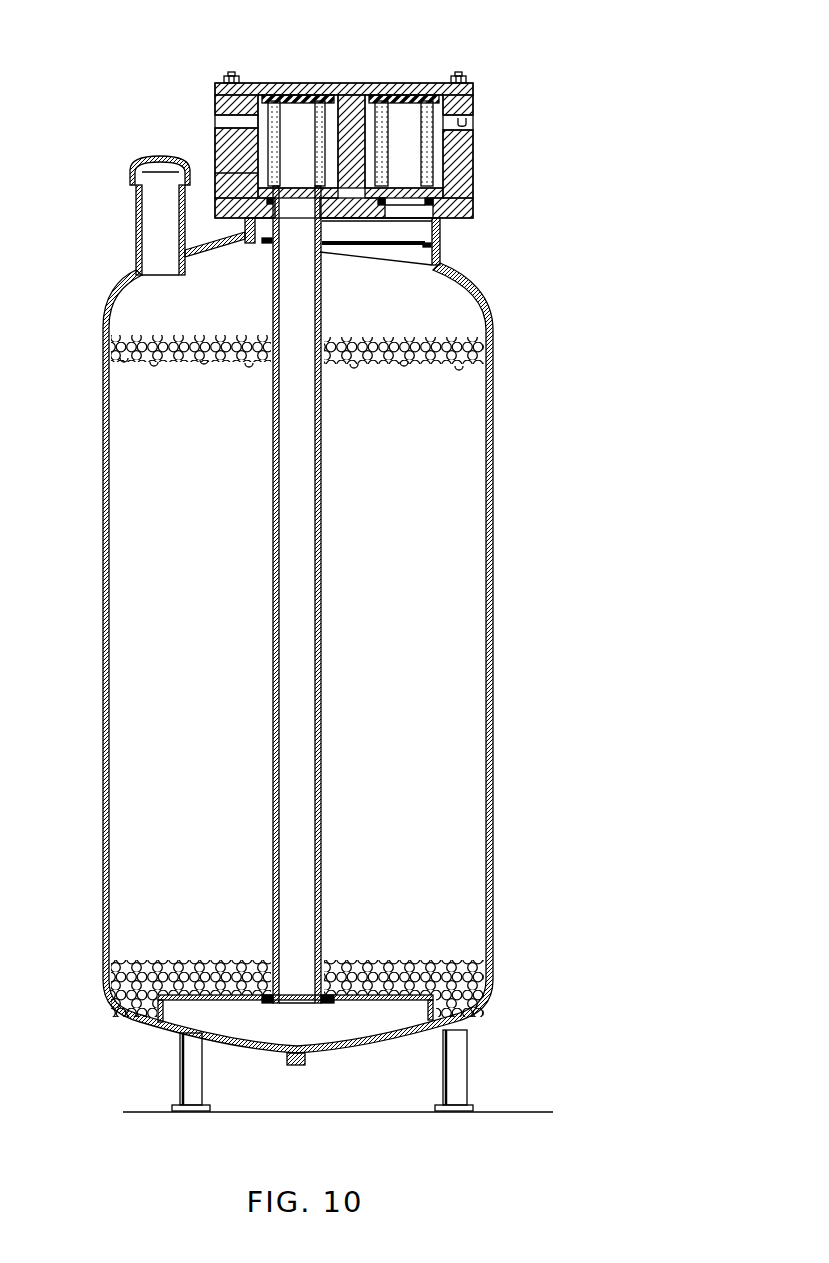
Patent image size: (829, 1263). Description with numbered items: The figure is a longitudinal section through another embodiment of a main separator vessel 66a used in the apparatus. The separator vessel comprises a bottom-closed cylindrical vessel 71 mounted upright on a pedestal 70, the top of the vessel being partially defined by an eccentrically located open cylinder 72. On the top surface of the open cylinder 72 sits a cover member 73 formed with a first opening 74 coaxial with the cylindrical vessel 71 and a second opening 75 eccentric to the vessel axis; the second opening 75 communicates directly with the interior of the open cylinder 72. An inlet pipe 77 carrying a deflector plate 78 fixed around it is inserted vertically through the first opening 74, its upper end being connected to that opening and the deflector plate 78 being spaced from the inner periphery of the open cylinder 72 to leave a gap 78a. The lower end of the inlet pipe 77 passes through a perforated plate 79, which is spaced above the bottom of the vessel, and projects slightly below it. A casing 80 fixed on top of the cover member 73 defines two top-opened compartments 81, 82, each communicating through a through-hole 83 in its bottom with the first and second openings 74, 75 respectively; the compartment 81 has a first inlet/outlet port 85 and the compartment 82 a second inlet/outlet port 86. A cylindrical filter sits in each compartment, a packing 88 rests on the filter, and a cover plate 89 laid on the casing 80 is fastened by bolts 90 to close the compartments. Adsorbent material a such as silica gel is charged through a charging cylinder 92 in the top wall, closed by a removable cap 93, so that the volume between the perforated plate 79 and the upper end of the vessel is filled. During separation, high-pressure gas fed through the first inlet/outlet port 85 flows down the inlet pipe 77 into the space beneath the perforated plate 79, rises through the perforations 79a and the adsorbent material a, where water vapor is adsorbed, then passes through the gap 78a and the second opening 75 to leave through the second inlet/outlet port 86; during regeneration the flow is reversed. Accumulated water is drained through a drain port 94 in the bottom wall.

The separator vessel 66a is at (512, 440).
The pedestal 70 is at (500, 1112).
The cylindrical vessel 71 is at (493, 618).
The open cylinder 72 is at (440, 240).
The cover member 73 is at (473, 215).
The first opening 74 is at (257, 243).
The second opening 75 is at (473, 208).
The inlet pipe 77 is at (322, 630).
The deflector plate 78 is at (348, 247).
The gap 78a is at (258, 243).
The perforated plate 79 is at (352, 965).
The perforations 79a is at (408, 965).
The casing 80 is at (473, 150).
The compartment 81 is at (345, 95).
The compartment 82 is at (395, 95).
The through-hole 83 is at (290, 180).
The first inlet/outlet port 85 is at (215, 121).
The second inlet/outlet port 86 is at (473, 118).
The packing 88 is at (277, 95).
The cover plate 89 is at (366, 95).
The bolt 90 is at (232, 72).
The charging cylinder 92 is at (136, 212).
The cap 93 is at (150, 158).
The drain port 94 is at (297, 1066).
The adsorbent material a is at (465, 968).